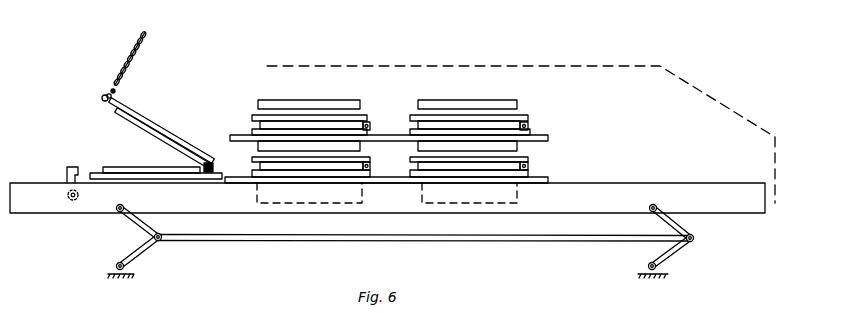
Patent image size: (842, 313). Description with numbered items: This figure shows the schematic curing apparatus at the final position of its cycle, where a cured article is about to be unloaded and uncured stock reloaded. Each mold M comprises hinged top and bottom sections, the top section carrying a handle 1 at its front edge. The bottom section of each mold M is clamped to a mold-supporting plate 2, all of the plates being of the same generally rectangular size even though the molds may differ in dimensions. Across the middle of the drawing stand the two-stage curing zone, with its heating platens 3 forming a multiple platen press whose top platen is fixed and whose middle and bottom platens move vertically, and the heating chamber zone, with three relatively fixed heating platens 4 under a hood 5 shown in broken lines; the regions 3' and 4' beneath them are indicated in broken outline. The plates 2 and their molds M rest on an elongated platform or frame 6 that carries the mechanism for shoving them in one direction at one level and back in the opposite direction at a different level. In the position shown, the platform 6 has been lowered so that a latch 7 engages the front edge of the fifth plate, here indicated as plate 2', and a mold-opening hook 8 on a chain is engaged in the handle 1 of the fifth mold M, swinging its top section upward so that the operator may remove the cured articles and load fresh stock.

The handle 1 is at (113, 100).
The mold-supporting plate 2 is at (401, 143).
The lower supporting plate 2' is at (156, 189).
The heating platens 3 is at (312, 114).
The lower chamber under press unit 3 3' is at (308, 207).
The fixed heating platens 4 is at (480, 110).
The lower chamber under press unit 4 4' is at (469, 207).
The hood 5 is at (703, 90).
The platform 6 is at (737, 196).
The latch 7 is at (66, 171).
The mold-opening hook 8 is at (103, 100).
The mold M is at (166, 131).